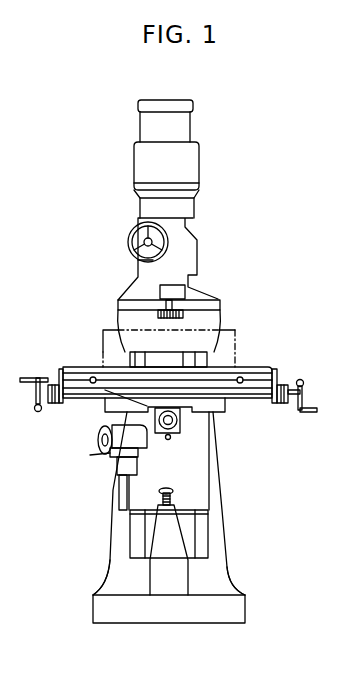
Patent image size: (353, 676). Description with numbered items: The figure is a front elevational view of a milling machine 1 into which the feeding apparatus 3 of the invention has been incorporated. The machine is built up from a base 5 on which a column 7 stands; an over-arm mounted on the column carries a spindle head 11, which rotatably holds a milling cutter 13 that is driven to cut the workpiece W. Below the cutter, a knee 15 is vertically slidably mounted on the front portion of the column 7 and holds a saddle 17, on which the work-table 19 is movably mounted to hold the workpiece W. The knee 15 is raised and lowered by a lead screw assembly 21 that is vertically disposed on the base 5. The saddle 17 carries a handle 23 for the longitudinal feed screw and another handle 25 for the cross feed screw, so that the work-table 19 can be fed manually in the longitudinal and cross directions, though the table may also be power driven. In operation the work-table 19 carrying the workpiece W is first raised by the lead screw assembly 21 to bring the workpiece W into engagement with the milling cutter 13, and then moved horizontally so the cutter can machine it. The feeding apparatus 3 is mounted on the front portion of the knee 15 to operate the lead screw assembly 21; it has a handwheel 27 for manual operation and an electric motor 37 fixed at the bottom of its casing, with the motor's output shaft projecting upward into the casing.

The milling machine 1 is at (233, 270).
The feeding apparatus 3 is at (90, 434).
The base 5 is at (191, 613).
The column 7 is at (220, 533).
The spindle head 11 is at (208, 190).
The milling cutter 13 is at (184, 314).
The knee 15 is at (201, 473).
The saddle 17 is at (230, 412).
The work-table 19 is at (272, 368).
The lead screw assembly 21 is at (150, 497).
The handle for longitudinal feed screw 23 is at (40, 378).
The handle for cross feed screw 25 is at (182, 430).
The handwheel 27 is at (96, 447).
The electric motor 37 is at (116, 470).
The workpiece W is at (236, 339).